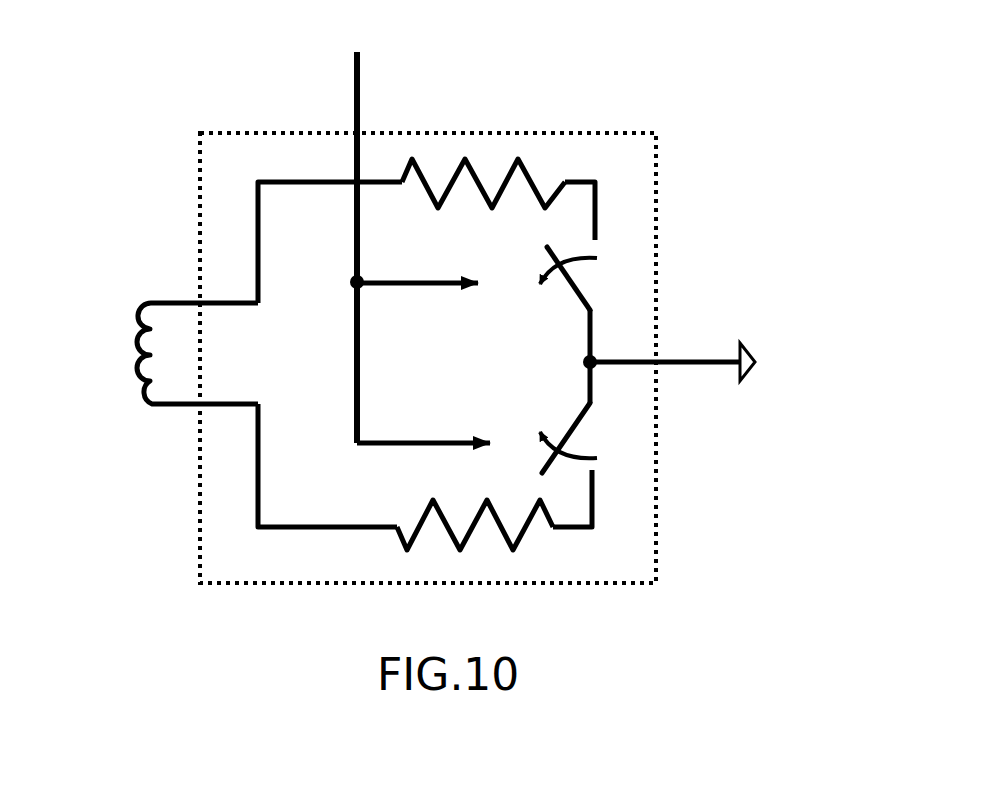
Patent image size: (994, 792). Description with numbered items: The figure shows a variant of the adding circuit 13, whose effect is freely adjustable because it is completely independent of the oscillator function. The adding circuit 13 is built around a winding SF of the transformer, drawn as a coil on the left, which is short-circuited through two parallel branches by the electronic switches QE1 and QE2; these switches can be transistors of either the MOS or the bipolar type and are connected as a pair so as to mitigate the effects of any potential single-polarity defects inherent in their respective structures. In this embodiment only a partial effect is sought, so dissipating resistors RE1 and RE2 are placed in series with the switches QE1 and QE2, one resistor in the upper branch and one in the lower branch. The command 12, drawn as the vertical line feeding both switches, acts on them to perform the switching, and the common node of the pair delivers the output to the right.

The dissipating resistor RE1 is at (495, 163).
The dissipating resistor RE2 is at (460, 560).
The electronic switch QE1 is at (605, 273).
The electronic switch QE2 is at (600, 443).
The feedback signal source coil SF is at (130, 368).
The command 12 is at (352, 375).
The adding circuit 13 is at (518, 391).